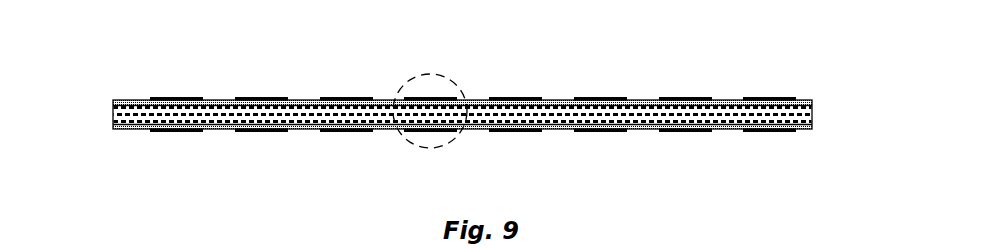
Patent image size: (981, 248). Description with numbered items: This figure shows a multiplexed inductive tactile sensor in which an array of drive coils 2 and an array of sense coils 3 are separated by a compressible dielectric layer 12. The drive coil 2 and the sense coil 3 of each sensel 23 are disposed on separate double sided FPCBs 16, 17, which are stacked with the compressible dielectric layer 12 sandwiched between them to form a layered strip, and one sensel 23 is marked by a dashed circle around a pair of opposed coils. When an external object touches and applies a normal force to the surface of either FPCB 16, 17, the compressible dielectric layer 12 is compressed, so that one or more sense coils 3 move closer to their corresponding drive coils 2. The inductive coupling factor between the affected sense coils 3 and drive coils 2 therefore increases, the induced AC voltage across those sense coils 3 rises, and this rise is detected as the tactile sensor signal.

The compressible dielectric layer 12 is at (812, 115).
The double sided FPCB 17 is at (137, 101).
The double sided FPCB 16 is at (138, 130).
The sense coil 3 is at (423, 97).
The drive coil 2 is at (428, 128).
The sensel 23 is at (442, 75).